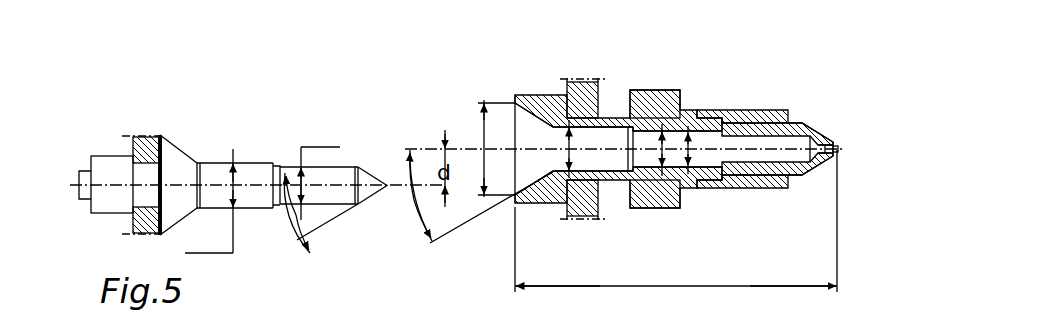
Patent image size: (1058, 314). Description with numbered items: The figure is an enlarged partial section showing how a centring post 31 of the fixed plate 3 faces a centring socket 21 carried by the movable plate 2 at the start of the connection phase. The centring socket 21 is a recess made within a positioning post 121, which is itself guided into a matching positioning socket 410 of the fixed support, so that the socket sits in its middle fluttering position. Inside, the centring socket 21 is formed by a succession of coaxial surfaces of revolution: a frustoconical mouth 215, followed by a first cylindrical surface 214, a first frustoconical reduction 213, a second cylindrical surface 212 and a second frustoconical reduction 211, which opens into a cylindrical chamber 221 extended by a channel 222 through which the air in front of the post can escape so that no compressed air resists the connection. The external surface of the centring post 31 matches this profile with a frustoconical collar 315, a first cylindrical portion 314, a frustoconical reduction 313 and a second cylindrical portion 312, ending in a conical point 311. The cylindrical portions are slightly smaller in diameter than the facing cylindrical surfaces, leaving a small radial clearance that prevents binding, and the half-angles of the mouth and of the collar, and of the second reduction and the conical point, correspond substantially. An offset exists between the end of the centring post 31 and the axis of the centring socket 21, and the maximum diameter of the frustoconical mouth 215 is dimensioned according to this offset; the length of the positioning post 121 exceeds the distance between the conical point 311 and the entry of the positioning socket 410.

The fixed plate 3 is at (147, 135).
The centring post 31 is at (395, 67).
The conical point 311 is at (368, 175).
The second cylindrical portion 312 is at (341, 172).
The frustoconical reduction 313 is at (275, 163).
The first cylindrical portion 314 is at (250, 168).
The frustoconical collar 315 is at (183, 164).
The movable plate 2 is at (587, 222).
The centring socket 21 is at (747, 40).
The second frustoconical reduction 211 is at (713, 165).
The second cylindrical surface 212 is at (673, 127).
The first frustoconical reduction 213 is at (627, 170).
The first cylindrical surface 214 is at (603, 168).
The frustoconical mouth 215 is at (533, 183).
The cylindrical chamber 221 is at (767, 160).
The channel 222 is at (838, 140).
The positioning socket 410 is at (727, 188).
The positioning post 121 is at (813, 170).